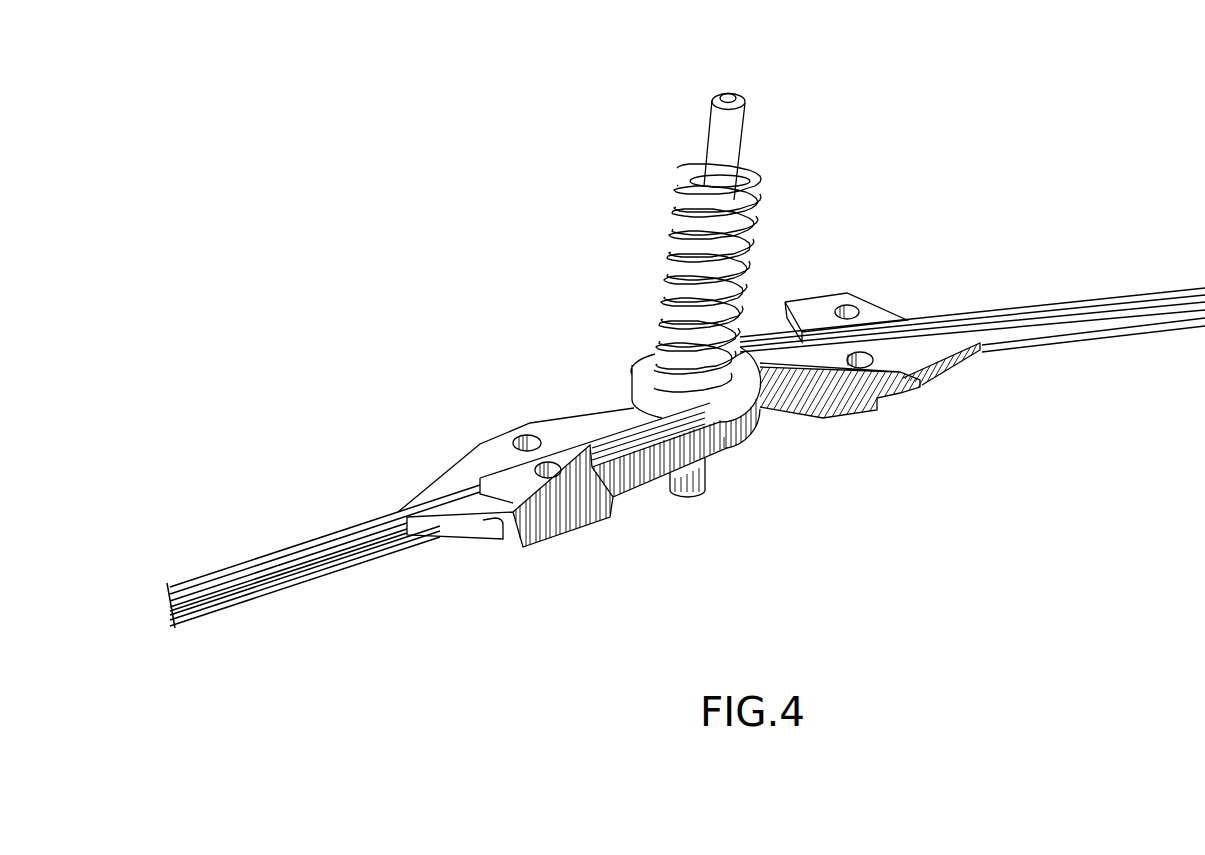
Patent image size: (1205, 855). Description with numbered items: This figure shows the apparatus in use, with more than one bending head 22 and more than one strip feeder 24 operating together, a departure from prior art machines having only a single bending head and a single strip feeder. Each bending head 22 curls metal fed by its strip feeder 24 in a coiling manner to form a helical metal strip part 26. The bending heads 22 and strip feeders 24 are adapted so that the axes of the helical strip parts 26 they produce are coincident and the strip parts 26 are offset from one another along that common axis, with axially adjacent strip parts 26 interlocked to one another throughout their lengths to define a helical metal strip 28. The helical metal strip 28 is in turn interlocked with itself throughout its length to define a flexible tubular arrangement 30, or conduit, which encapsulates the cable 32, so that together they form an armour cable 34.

The bending head 22 is at (638, 398).
The strip feeder 24 is at (487, 457).
The helical metal strip part 26 is at (667, 292).
The helical metal strip 28 is at (632, 278).
The flexible tubular arrangement 30 is at (597, 269).
The cable 32 is at (715, 147).
The armour cable 34 is at (557, 223).